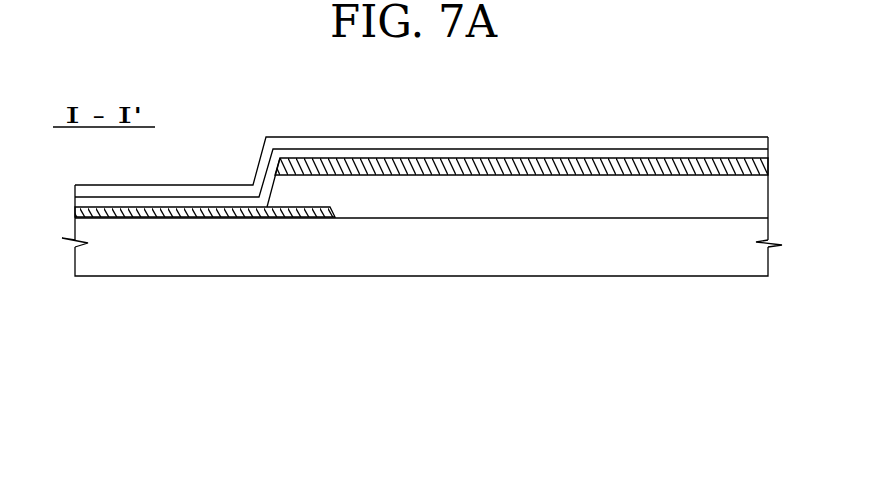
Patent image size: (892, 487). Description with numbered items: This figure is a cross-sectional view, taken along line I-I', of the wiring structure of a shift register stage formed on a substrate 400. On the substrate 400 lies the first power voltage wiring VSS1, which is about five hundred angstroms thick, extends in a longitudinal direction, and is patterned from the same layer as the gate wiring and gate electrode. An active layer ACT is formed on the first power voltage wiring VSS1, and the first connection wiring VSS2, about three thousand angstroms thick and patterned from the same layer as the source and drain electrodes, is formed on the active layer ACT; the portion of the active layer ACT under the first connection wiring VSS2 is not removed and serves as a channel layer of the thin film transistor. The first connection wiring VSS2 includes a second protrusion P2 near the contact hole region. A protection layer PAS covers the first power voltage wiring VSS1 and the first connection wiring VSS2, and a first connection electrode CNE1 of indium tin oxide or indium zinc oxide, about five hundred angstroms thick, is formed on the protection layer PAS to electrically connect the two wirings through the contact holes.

The substrate 400 is at (98, 255).
The first power voltage wiring VSS1 is at (160, 208).
The protection layer PAS is at (215, 202).
The first connection electrode CNE1 is at (248, 190).
The second protrusion P2 is at (303, 175).
The active layer ACT is at (407, 202).
The first connection wiring VSS2 is at (547, 168).